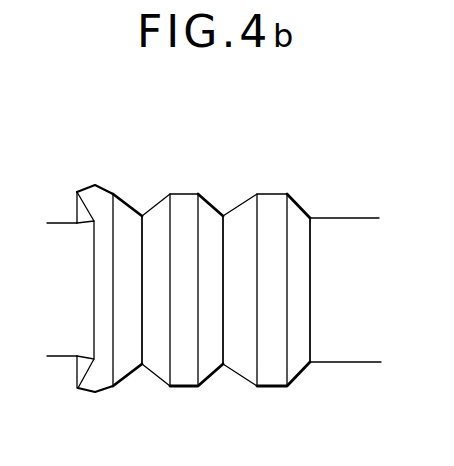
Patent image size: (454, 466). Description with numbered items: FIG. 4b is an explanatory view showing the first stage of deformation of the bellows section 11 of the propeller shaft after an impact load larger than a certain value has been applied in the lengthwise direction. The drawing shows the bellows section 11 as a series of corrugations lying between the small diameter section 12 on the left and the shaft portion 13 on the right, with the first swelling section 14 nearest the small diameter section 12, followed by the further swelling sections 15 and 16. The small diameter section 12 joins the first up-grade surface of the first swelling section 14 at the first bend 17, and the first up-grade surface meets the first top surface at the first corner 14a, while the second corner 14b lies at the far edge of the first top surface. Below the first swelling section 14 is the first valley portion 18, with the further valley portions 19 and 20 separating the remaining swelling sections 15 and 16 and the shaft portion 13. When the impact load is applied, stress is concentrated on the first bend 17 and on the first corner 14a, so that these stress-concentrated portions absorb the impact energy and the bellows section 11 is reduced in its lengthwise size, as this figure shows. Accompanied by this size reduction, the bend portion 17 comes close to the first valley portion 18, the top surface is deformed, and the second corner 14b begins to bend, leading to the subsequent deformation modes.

The bellows section 11 is at (188, 150).
The small diameter section 12 is at (55, 221).
The second pipe end 13 is at (355, 217).
The first swelling section 14 is at (101, 183).
The first corner 14a is at (77, 192).
The second corner 14b is at (113, 193).
The second convolution 15 is at (201, 186).
The third convolution 16 is at (273, 182).
The first bend 17 is at (93, 225).
The first valley portion 18 is at (143, 214).
The second trough 19 is at (223, 212).
The end trough / transition to pipe 20 is at (311, 217).